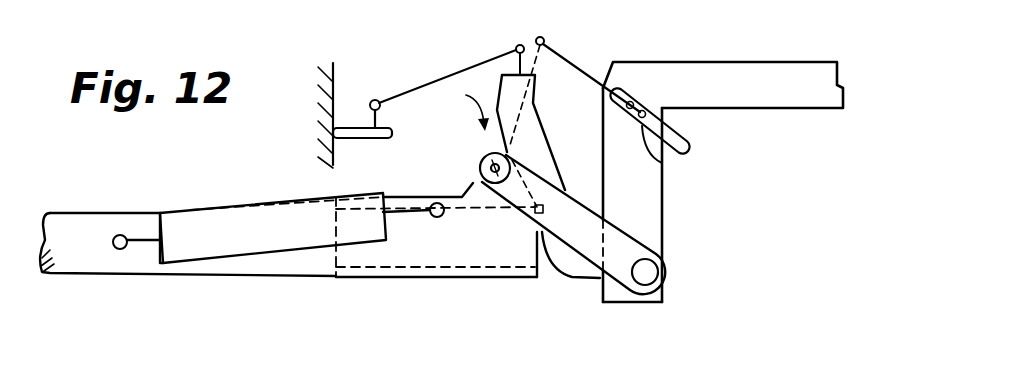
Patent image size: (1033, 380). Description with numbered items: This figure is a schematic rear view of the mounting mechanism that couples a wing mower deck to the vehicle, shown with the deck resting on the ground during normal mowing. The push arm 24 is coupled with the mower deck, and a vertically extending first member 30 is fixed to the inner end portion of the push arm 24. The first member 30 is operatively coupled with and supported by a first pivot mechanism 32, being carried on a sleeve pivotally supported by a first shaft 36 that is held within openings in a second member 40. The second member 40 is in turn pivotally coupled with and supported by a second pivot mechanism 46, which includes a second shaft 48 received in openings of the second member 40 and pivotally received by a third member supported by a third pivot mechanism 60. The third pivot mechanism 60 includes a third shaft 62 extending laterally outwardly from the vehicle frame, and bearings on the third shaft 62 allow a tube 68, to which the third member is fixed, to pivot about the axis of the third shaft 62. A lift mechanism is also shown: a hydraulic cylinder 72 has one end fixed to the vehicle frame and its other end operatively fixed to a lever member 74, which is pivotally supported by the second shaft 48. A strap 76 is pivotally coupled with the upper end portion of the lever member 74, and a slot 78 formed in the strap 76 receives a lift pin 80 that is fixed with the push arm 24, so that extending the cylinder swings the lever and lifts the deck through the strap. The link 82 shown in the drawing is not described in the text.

The push arm 24 is at (757, 60).
The first member 30 is at (665, 196).
The first pivot mechanism 32 is at (650, 306).
The first shaft 36 is at (658, 272).
The second member 40 is at (573, 184).
The second pivot mechanism 46 is at (462, 106).
The second shaft 48 is at (485, 160).
The third pivot mechanism 60 is at (400, 288).
The third shaft 62 is at (460, 268).
The tube 68 is at (492, 280).
The hydraulic cylinder 72 is at (198, 248).
The lever member 74 is at (538, 37).
The strap 76 is at (557, 52).
The slot 78 is at (632, 93).
The lift pin 80 is at (667, 162).
The link 82 is at (447, 74).